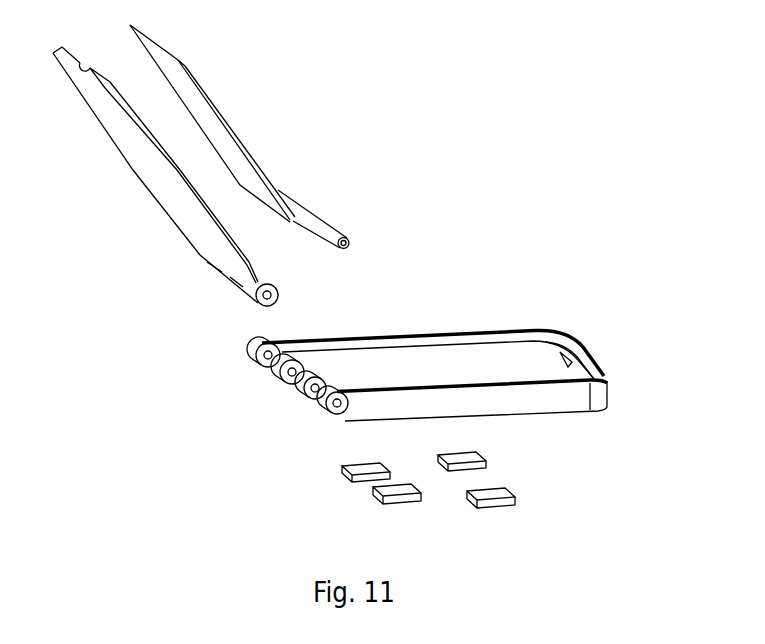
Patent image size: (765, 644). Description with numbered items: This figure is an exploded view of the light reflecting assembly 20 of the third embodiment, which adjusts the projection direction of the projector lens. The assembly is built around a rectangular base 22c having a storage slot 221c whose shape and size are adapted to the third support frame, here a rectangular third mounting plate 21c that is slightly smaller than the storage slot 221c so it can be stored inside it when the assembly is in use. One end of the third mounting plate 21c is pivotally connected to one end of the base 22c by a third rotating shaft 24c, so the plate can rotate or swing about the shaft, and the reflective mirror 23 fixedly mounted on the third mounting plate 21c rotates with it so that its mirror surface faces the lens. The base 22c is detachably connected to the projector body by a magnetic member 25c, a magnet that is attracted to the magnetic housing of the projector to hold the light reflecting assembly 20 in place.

The light reflecting assembly 20 is at (495, 185).
The third mounting plate 21c is at (152, 183).
The reflective mirror 23 is at (228, 118).
The third rotating shaft 24c is at (318, 210).
The base 22c is at (552, 398).
The storage slot 221c is at (482, 363).
The magnetic member 25c is at (368, 470).